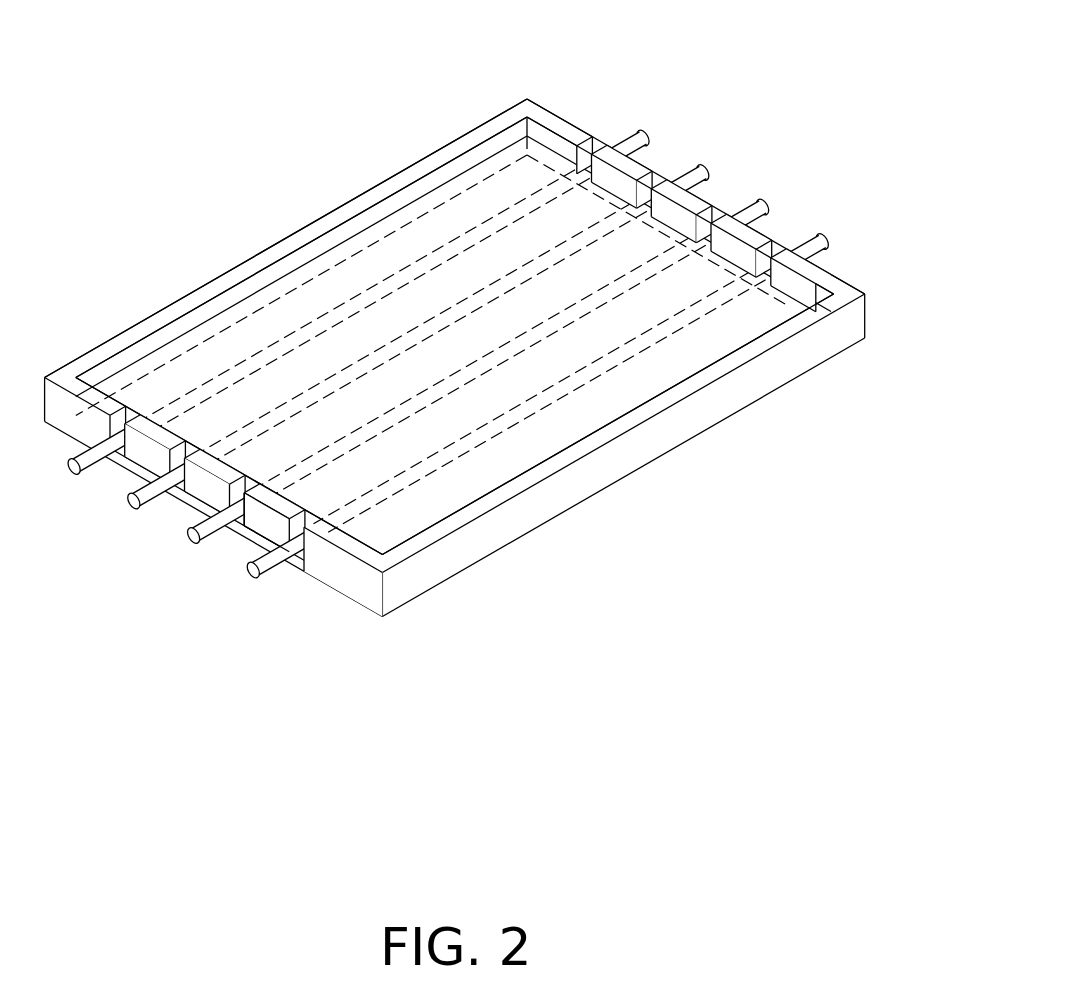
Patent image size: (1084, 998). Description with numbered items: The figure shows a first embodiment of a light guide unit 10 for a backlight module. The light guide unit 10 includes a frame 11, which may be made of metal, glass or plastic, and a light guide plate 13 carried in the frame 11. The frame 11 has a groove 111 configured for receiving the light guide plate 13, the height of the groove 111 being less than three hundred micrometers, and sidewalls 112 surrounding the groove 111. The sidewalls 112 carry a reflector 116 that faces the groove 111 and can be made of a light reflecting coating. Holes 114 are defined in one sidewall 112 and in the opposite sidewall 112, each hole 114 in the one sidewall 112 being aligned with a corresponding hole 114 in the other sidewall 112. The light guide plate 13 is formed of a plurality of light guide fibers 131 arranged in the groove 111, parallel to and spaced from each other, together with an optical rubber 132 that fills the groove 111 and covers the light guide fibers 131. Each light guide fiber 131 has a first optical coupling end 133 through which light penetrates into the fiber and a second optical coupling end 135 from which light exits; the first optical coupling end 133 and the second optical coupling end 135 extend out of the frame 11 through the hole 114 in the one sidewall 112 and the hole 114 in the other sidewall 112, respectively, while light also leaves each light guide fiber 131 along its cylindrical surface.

The light guide unit 10 is at (446, 314).
The frame 11 is at (640, 474).
The groove 111 is at (550, 158).
The sidewalls 112 is at (270, 255).
The hole 114 is at (232, 492).
The reflector 116 is at (397, 205).
The light guide plate 13 is at (429, 356).
The light guide fiber 131 is at (210, 455).
The optical rubber 132 is at (161, 388).
The first optical coupling end 133 is at (66, 468).
The second optical coupling end 135 is at (645, 132).